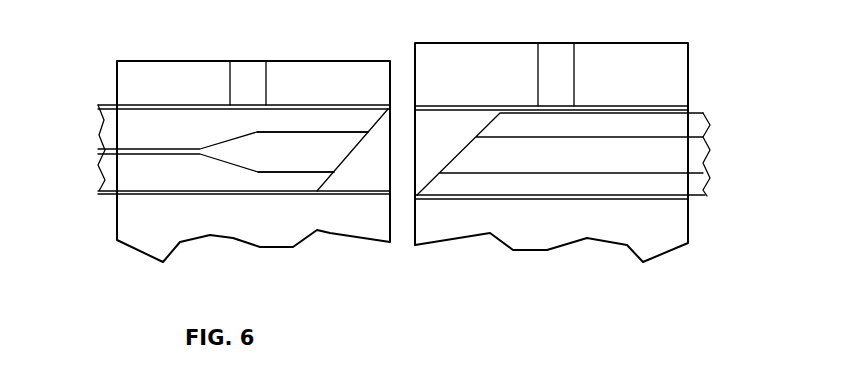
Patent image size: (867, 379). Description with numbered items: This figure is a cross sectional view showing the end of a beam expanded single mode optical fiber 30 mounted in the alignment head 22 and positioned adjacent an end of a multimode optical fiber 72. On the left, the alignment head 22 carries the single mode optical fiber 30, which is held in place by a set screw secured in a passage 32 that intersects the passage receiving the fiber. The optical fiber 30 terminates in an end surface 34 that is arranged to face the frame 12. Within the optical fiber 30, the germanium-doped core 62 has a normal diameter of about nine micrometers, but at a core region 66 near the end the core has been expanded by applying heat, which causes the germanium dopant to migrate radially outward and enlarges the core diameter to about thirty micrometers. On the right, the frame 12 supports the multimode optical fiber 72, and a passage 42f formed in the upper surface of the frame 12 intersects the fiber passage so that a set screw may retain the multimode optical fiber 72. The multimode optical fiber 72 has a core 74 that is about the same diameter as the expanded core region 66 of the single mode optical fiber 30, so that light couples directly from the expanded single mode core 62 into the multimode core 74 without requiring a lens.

The frame 12 is at (690, 223).
The alignment head 22 is at (116, 222).
The optical fiber 30 is at (177, 107).
The passage 32 is at (265, 70).
The end surface 34 is at (345, 160).
The passage 42f is at (573, 53).
The core 62 is at (133, 149).
The core region 66 is at (343, 130).
The multimode optical fiber 72 is at (580, 185).
The core 74 is at (468, 173).